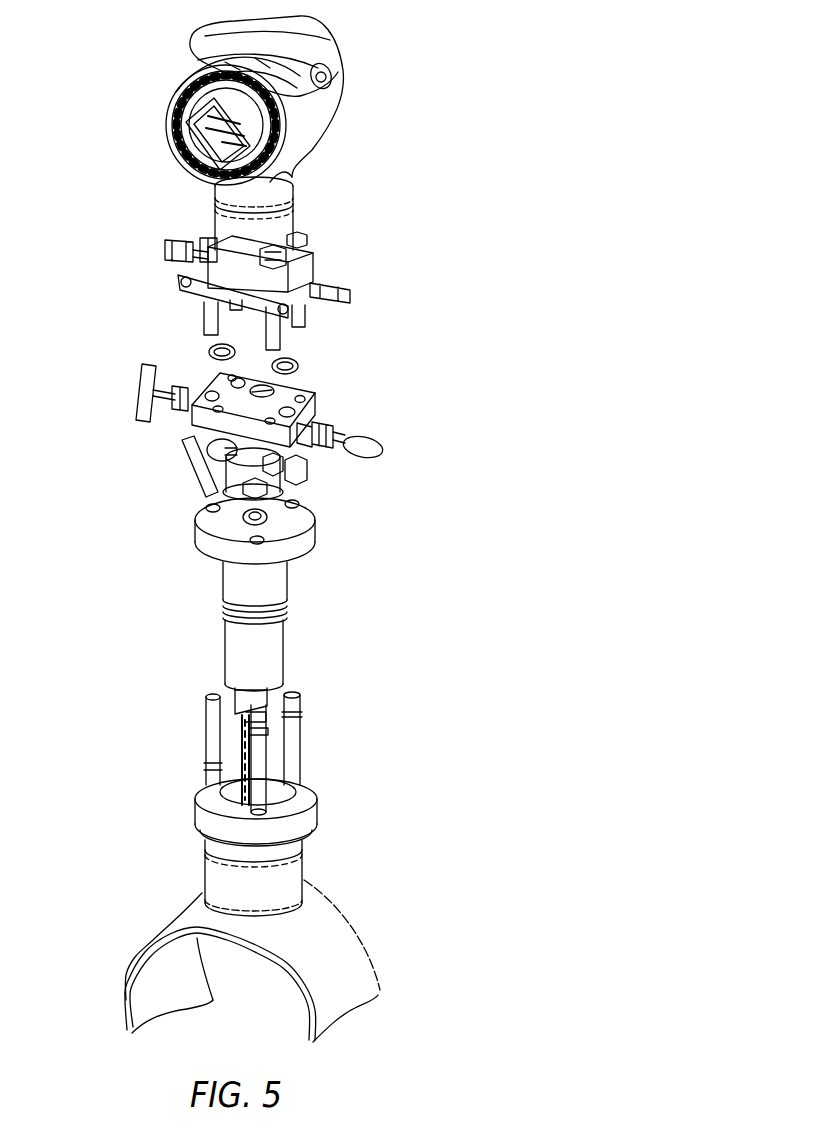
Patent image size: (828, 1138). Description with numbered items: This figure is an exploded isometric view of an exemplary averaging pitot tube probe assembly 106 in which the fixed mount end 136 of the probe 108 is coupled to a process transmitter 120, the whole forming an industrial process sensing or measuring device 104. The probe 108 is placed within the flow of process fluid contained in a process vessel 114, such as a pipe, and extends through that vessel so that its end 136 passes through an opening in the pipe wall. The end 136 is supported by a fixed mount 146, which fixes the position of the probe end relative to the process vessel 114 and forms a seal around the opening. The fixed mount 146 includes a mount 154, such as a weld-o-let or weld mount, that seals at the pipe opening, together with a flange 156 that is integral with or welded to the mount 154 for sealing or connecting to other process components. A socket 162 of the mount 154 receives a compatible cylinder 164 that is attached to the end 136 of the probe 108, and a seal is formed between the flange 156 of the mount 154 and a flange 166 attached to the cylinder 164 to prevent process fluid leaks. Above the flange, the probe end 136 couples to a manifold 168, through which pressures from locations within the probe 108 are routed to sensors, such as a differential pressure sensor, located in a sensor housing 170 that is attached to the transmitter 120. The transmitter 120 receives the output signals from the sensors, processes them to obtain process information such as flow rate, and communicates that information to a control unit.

The industrial process sensing or measuring device 104 is at (433, 175).
The probe assembly 106 is at (112, 492).
The probe 108 is at (237, 763).
The process vessel 114 is at (347, 970).
The transmitter 120 is at (299, 117).
The end of the probe 136 is at (232, 688).
The fixed mount 146 is at (143, 853).
The mount 154 is at (300, 869).
The flange 156 is at (303, 820).
The socket 162 is at (280, 790).
The cylinder 164 is at (278, 592).
The flange 166 is at (305, 538).
The manifold 168 is at (312, 394).
The sensor housing 170 is at (205, 240).